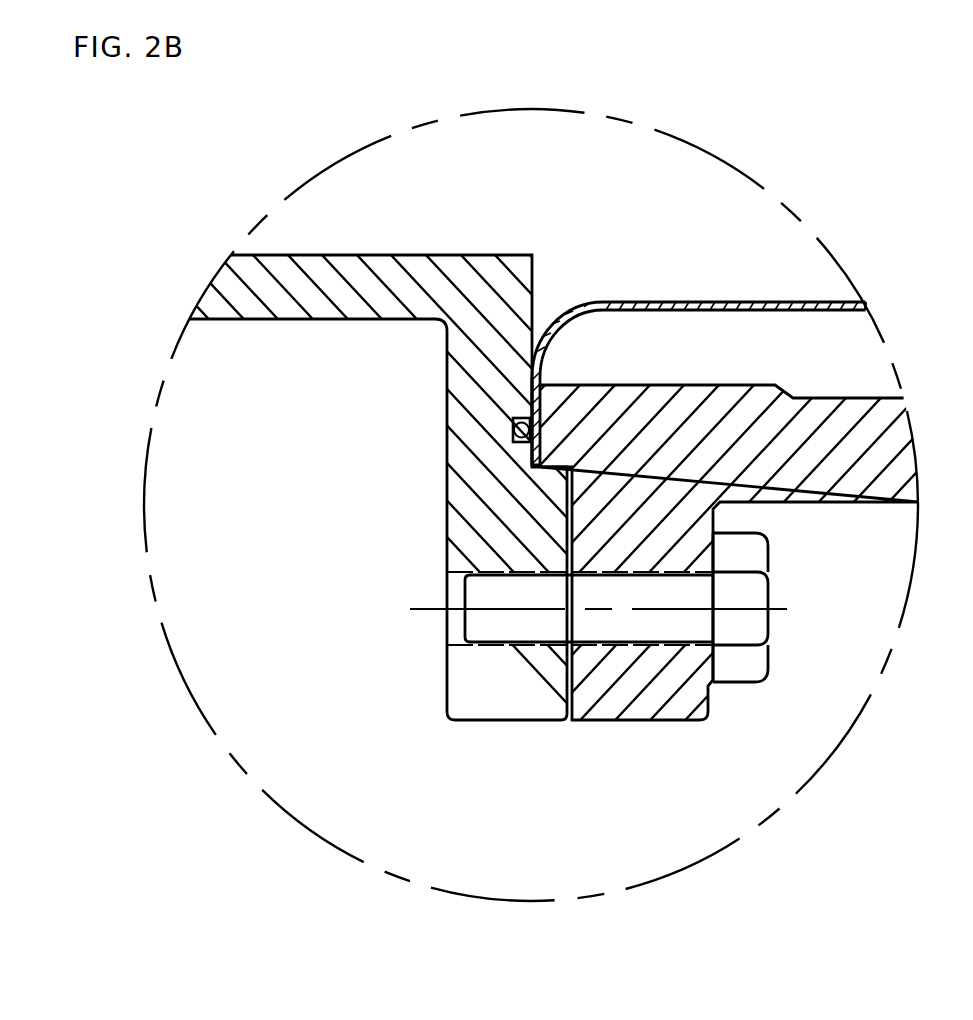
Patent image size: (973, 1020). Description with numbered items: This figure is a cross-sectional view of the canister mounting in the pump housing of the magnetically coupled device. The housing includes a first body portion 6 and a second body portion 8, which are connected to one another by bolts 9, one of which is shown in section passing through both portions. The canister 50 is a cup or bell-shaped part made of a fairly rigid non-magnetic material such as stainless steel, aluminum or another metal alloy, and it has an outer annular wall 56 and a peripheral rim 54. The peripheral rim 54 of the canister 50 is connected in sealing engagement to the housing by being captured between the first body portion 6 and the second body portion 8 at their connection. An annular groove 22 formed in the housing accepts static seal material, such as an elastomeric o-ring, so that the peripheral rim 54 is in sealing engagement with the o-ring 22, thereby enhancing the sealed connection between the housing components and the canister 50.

The first body portion 6 is at (878, 488).
The second body portion 8 is at (288, 305).
The bolts 9 is at (752, 625).
The annular groove 22 is at (517, 432).
The canister 50 is at (766, 302).
The peripheral rim 54 is at (532, 372).
The outer annular wall 56 is at (711, 300).